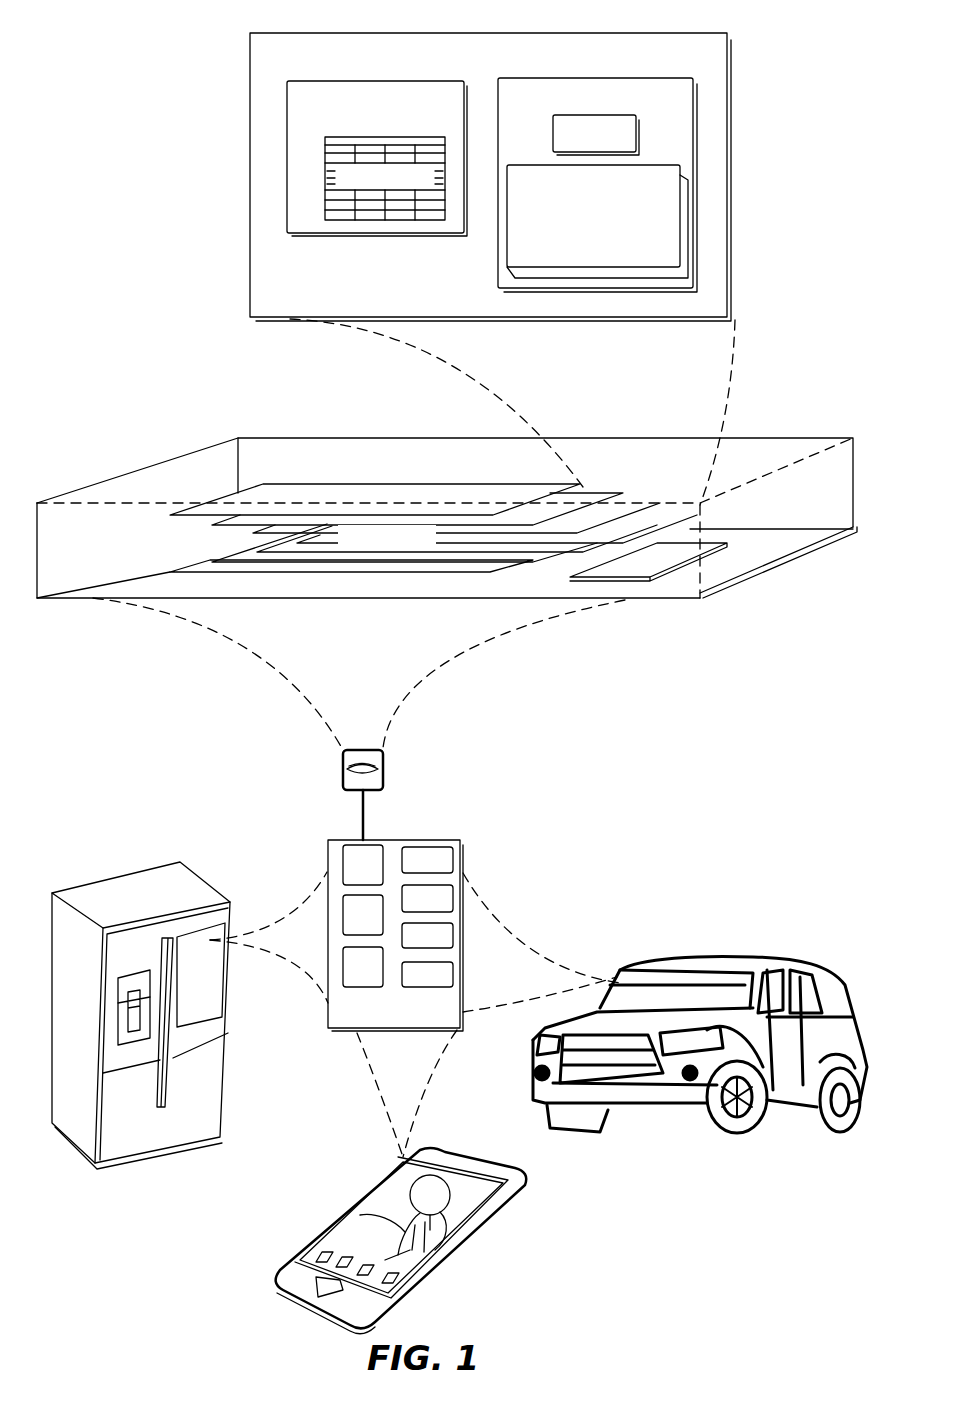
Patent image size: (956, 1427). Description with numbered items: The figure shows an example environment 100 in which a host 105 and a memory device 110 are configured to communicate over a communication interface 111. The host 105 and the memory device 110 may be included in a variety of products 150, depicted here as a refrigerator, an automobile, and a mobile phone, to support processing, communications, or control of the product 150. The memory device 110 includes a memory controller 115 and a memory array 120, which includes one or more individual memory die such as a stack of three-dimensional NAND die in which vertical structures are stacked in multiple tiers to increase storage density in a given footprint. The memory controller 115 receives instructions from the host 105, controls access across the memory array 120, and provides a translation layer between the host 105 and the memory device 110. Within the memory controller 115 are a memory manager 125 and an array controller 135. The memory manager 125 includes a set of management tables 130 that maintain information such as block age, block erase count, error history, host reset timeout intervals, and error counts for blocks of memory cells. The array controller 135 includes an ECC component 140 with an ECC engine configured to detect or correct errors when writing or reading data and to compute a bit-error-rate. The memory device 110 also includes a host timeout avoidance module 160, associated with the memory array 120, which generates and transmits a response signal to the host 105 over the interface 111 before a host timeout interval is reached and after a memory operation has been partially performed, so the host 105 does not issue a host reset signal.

The environment 100 is at (750, 30).
The host 105 is at (328, 860).
The memory device 110 is at (447, 610).
The communication interface 111 is at (360, 815).
The memory controller 115 is at (250, 40).
The memory array 120 is at (447, 483).
The memory manager 125 is at (297, 101).
The management tables 130 is at (325, 173).
The array controller 135 is at (698, 82).
The ECC component 140 is at (636, 143).
The products 150 is at (137, 868).
The host timeout avoidance module 160 is at (680, 227).